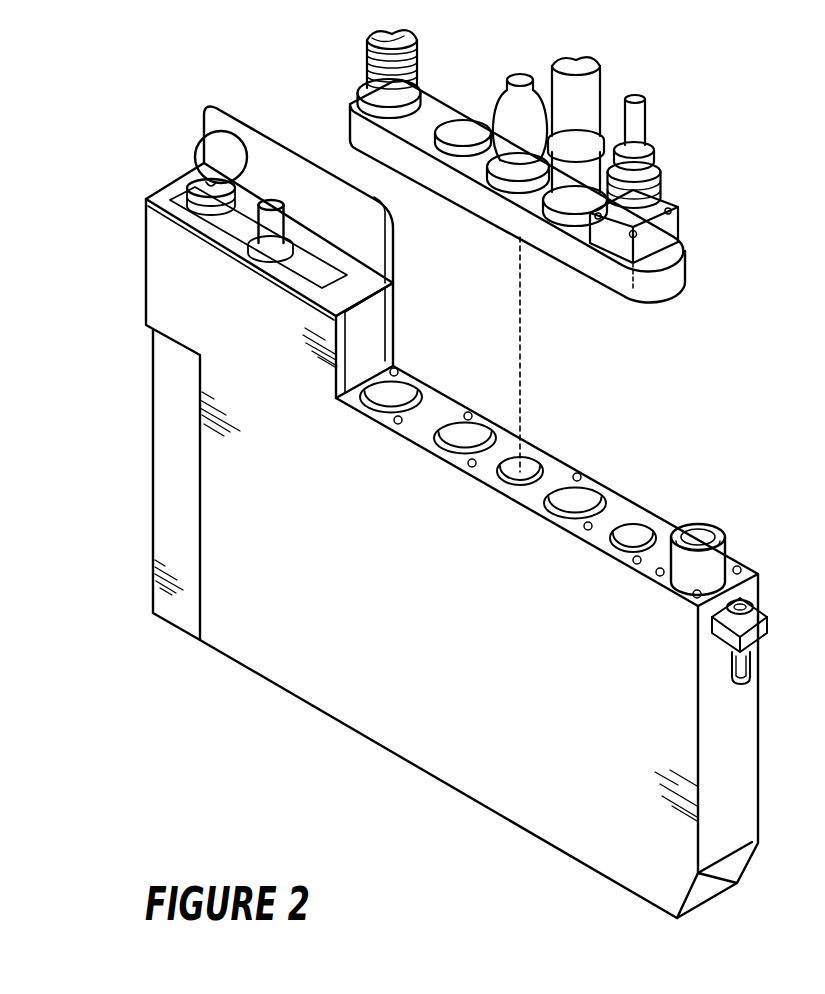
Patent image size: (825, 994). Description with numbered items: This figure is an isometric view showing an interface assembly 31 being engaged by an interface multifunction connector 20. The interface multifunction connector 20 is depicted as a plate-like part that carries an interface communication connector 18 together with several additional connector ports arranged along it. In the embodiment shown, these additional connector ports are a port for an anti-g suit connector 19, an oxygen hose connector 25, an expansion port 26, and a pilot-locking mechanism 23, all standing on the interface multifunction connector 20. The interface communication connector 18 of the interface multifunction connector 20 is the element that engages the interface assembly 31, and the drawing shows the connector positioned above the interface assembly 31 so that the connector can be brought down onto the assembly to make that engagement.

The interface communication connector 18 is at (653, 193).
The anti-g suit connector 19 is at (563, 78).
The interface multifunction connector 20 is at (476, 197).
The pilot-locking mechanism 23 is at (506, 107).
The oxygen hose connector 25 is at (381, 43).
The expansion port 26 is at (463, 129).
The interface assembly 31 is at (376, 716).